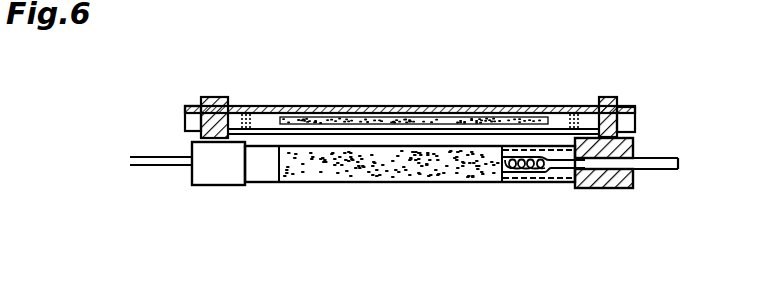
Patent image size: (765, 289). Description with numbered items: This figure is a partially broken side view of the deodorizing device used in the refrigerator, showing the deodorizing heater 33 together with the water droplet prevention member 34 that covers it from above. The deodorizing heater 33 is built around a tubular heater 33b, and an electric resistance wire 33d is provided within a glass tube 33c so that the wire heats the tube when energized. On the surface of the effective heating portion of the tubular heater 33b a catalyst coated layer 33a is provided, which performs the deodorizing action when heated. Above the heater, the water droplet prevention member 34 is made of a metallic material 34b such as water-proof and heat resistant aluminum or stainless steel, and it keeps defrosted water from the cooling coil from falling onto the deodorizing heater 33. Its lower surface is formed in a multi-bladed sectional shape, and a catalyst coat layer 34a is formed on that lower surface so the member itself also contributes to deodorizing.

The deodorizing heater 33 is at (370, 184).
The catalyst coated layer 33a is at (318, 166).
The tubular heater 33b is at (585, 188).
The glass tube 33c is at (543, 184).
The electric resistance wire 33d is at (511, 179).
The water droplet prevention member 34 is at (494, 106).
The catalyst coat layer 34a is at (322, 105).
The metallic material 34b is at (417, 105).